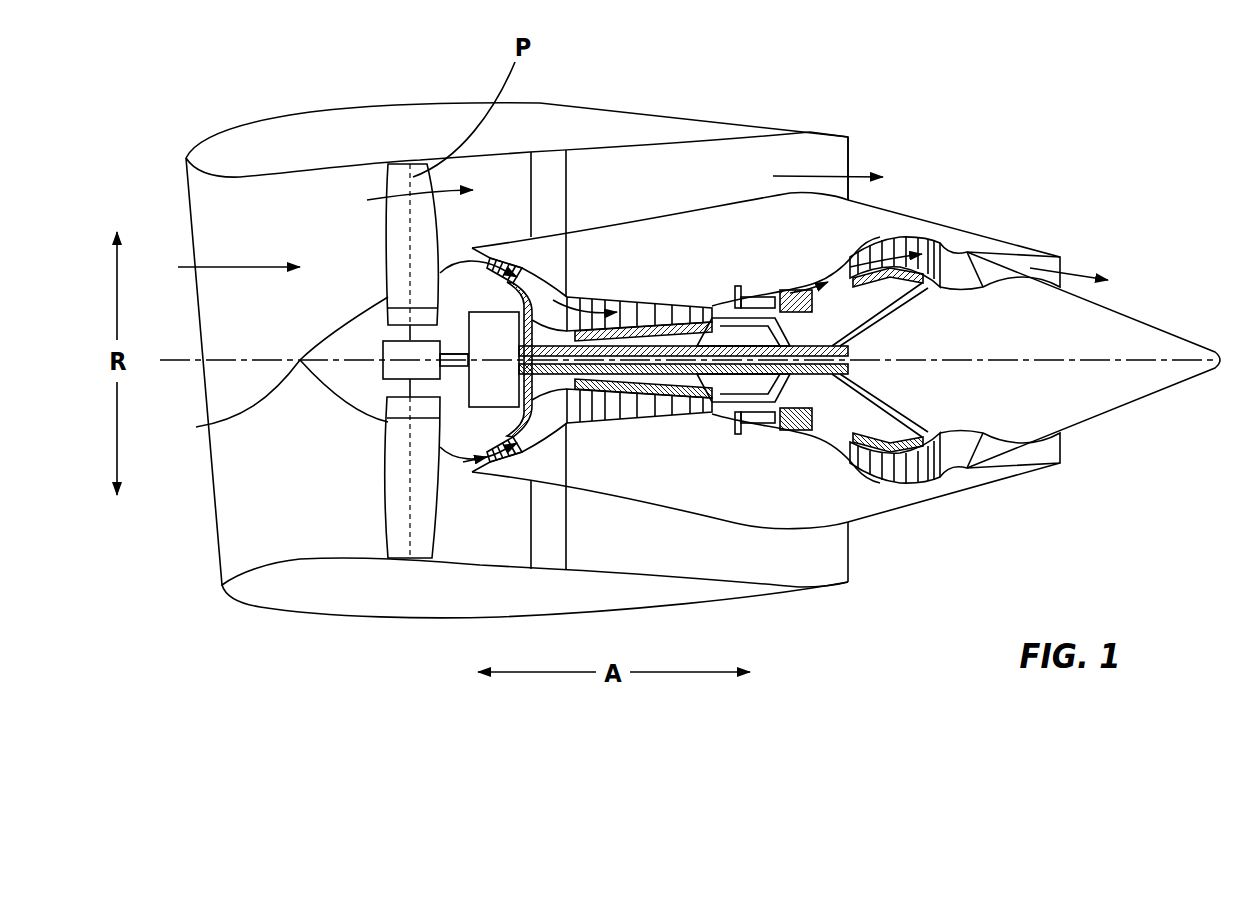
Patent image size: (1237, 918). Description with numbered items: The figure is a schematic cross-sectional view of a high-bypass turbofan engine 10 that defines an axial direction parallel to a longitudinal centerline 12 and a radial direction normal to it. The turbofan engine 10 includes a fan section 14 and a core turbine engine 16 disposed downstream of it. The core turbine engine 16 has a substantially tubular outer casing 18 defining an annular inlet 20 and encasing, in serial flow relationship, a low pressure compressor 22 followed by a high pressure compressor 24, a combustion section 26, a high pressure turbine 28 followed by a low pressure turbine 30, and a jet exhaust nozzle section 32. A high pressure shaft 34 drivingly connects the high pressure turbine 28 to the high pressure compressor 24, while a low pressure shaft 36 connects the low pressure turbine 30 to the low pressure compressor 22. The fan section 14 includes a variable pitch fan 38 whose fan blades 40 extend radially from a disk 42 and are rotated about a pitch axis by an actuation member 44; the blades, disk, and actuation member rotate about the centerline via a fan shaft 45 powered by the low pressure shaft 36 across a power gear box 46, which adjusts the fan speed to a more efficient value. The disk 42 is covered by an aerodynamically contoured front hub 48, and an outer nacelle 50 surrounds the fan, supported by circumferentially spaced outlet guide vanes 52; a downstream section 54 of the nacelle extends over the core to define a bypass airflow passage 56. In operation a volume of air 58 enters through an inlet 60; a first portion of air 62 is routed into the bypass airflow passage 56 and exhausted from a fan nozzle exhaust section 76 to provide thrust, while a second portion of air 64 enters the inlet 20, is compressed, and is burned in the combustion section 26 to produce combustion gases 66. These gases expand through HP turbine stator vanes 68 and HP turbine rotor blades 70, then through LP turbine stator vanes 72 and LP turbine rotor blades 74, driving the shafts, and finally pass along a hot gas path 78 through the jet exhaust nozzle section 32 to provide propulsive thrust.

The turbofan engine 10 is at (983, 118).
The longitudinal centerline 12 is at (1005, 358).
The fan section 14 is at (347, 187).
The core turbine engine 16 is at (677, 253).
The outer casing 18 is at (713, 515).
The annular inlet 20 is at (463, 462).
The low pressure compressor 22 is at (522, 416).
The high pressure compressor 24 is at (593, 417).
The combustion section 26 is at (751, 435).
The high pressure turbine 28 is at (812, 430).
The low pressure turbine 30 is at (928, 480).
The jet exhaust nozzle section 32 is at (983, 463).
The high pressure shaft 34 is at (755, 340).
The low pressure shaft 36 is at (873, 327).
The variable pitch fan 38 is at (353, 410).
The fan blades 40 is at (387, 503).
The disk 42 is at (390, 312).
The actuation member 44 is at (383, 345).
The fan shaft 45 is at (453, 354).
The power gear box 46 is at (553, 300).
The front hub 48 is at (197, 427).
The outer nacelle 50 is at (430, 620).
The outlet guide vanes 52 is at (566, 182).
The downstream section of the nacelle 54 is at (797, 130).
The bypass airflow passage 56 is at (705, 191).
The volume of air 58 is at (237, 260).
The inlet 60 is at (220, 560).
The first portion of air 62 is at (403, 203).
The second portion of air 64 is at (460, 258).
The combustion gases 66 is at (793, 287).
The HP turbine stator vanes 68 is at (767, 430).
The HP turbine rotor blades 70 is at (800, 405).
The LP turbine stator vanes 72 is at (853, 466).
The LP turbine rotor blades 74 is at (863, 480).
The fan nozzle exhaust section 76 is at (848, 160).
The hot gas path 78 is at (837, 273).